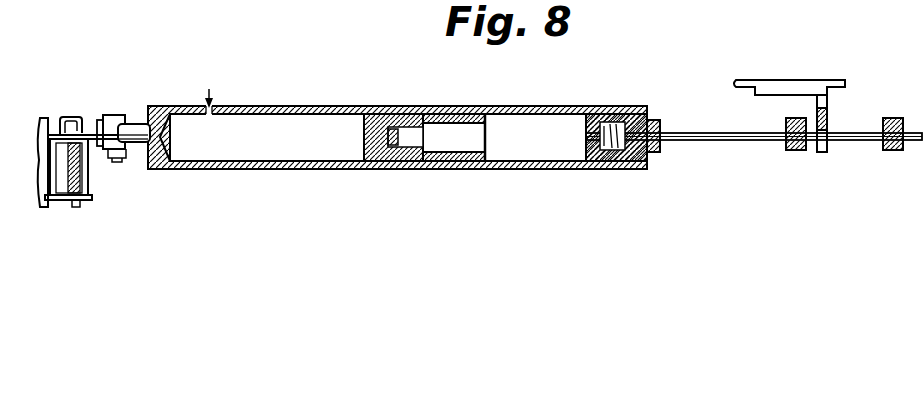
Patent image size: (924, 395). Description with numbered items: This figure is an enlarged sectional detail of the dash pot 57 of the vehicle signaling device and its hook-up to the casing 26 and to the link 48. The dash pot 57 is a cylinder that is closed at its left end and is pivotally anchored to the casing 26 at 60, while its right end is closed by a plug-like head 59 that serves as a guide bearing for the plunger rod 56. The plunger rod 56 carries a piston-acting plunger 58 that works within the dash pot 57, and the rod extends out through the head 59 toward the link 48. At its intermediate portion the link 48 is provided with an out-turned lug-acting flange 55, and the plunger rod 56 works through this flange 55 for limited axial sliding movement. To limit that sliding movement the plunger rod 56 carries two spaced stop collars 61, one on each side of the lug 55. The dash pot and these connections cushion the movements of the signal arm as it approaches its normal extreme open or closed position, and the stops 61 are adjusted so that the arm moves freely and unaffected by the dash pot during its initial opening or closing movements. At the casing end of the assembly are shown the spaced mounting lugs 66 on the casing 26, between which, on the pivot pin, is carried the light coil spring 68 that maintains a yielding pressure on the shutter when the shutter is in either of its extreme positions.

The casing 26 is at (42, 128).
The link 48 is at (742, 85).
The lug-acting flange 55 is at (827, 112).
The plunger rod 56 is at (760, 129).
The dash pot 57 is at (283, 106).
The piston-acting plunger 58 is at (425, 114).
The plug-like head 59 is at (655, 120).
The pivotal anchorage 60 is at (126, 118).
The stop collars 61 is at (795, 150).
The mounting lugs 66 is at (64, 139).
The coil spring 68 is at (88, 173).